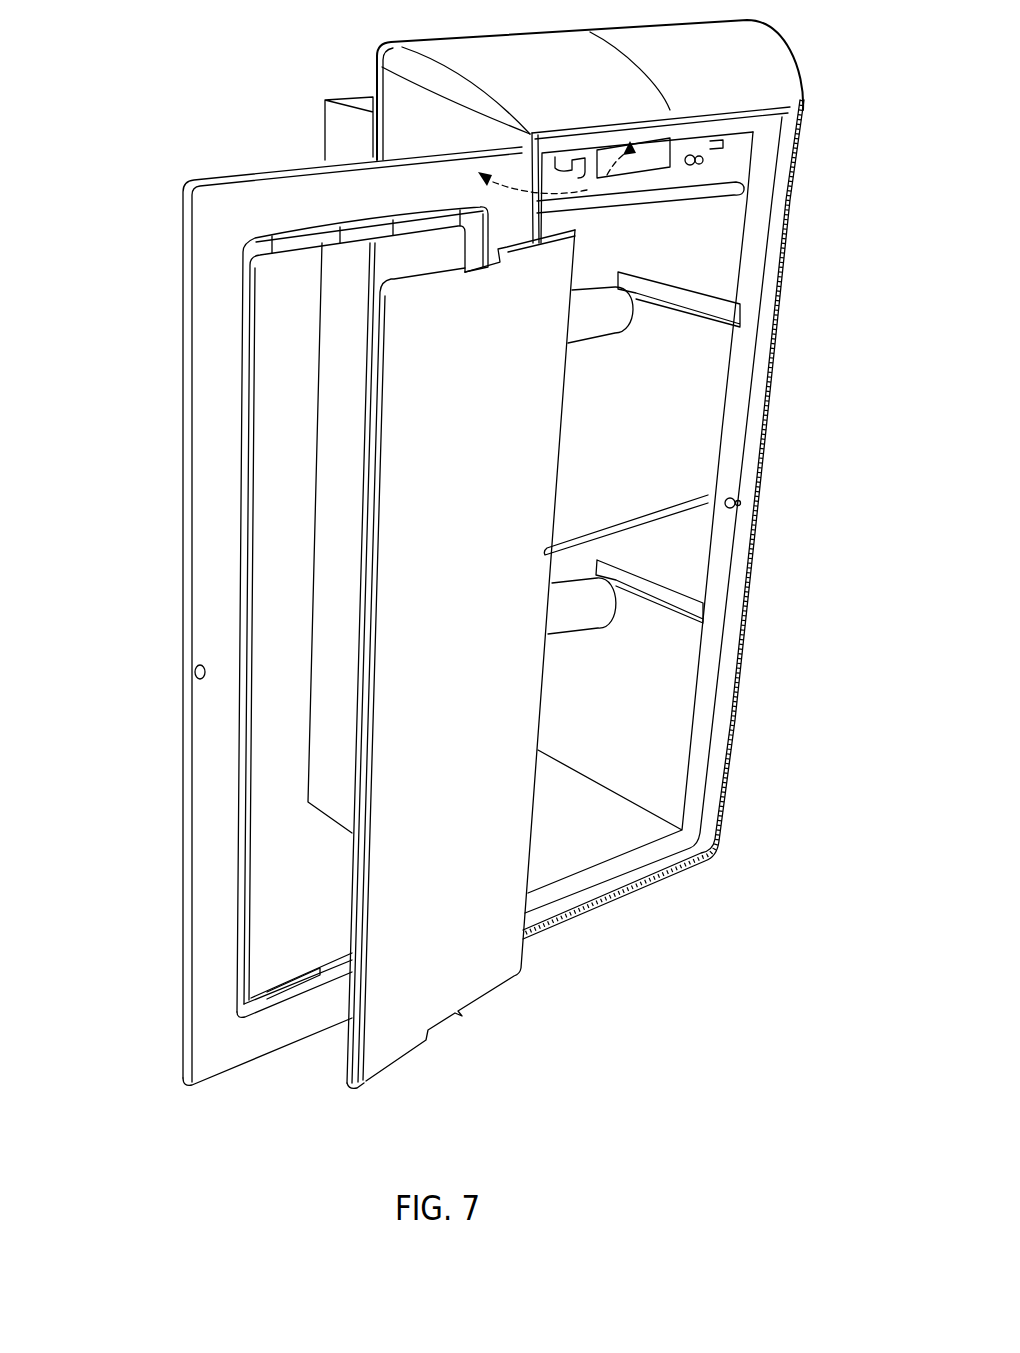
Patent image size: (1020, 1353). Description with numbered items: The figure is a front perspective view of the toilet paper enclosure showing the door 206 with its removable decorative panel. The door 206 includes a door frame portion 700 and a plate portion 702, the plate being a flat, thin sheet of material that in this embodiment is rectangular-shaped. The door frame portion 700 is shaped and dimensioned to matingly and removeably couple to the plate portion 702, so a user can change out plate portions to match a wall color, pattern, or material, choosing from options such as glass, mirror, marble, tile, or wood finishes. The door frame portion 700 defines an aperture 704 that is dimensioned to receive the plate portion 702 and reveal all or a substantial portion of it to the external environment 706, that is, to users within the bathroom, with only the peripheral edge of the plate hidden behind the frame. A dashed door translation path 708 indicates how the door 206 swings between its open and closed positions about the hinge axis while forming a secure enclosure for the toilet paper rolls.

The door 206 is at (247, 152).
The door frame portion 700 is at (211, 619).
The plate portion 702 is at (473, 944).
The aperture 704 is at (285, 926).
The external environment 706 is at (826, 1001).
The door translation path 708 is at (610, 176).